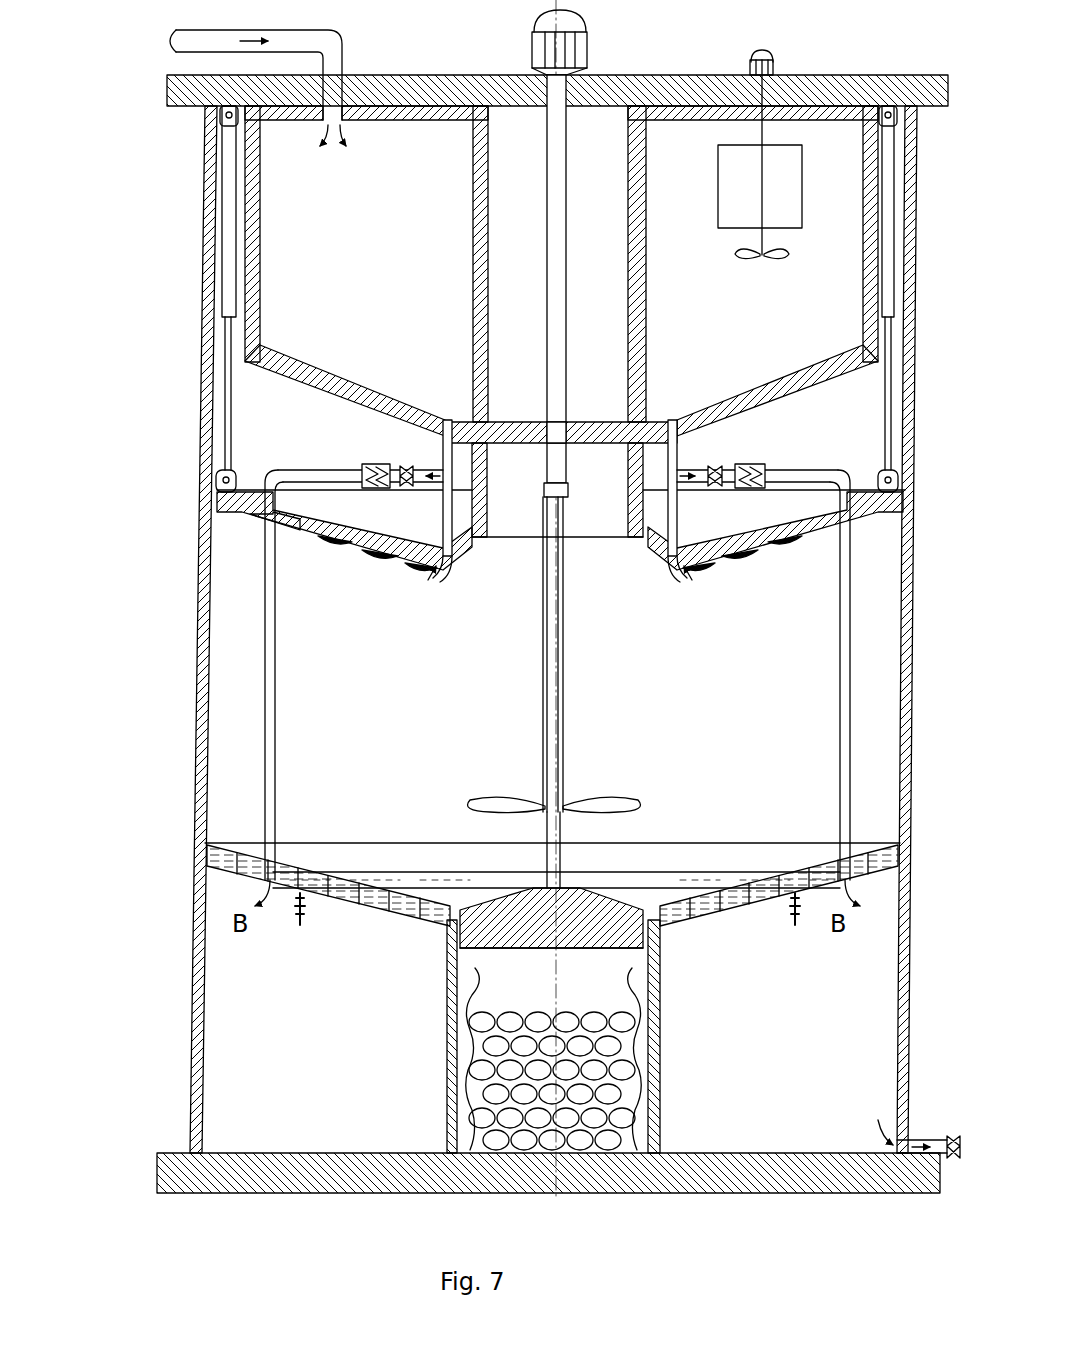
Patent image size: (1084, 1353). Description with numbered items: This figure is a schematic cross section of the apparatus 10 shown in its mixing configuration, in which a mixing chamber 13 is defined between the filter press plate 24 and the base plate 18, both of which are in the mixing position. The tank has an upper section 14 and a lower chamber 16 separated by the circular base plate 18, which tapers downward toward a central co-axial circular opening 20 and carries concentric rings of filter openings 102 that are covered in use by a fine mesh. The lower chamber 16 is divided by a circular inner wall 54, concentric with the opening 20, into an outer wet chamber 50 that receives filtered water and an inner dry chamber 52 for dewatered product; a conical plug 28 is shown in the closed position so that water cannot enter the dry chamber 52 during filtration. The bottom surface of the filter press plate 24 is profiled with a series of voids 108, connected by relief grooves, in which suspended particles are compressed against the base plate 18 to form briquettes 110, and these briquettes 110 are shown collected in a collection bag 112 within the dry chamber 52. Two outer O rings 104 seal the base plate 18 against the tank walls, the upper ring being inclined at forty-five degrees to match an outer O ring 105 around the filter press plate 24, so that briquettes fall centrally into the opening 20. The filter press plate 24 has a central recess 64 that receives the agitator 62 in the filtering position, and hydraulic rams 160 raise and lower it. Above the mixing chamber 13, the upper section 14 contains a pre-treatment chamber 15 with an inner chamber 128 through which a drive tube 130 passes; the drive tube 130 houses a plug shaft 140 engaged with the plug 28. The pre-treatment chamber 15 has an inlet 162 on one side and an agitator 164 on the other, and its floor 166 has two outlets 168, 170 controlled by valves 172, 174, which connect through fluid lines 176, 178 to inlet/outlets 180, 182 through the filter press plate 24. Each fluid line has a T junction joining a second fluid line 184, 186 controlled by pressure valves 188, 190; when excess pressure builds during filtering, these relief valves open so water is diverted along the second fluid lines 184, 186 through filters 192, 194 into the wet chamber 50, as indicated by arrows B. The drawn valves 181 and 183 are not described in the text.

The apparatus 10 is at (148, 462).
The mixing chamber 13 is at (660, 748).
The upper section 14 is at (140, 352).
The pre-treatment chamber 15 is at (440, 240).
The lower chamber 16 is at (865, 1002).
The base plate 18 is at (722, 915).
The central opening 20 is at (655, 956).
The filter press plate 24 is at (735, 565).
The conical plug 28 is at (590, 905).
The wet chamber 50 is at (826, 1044).
The dry chamber 52 is at (540, 994).
The inner wall 54 is at (445, 995).
The agitator 62 is at (482, 797).
The central recess 64 is at (605, 496).
The filter openings 102 is at (392, 898).
The outer O rings 104 is at (207, 846).
The outer O ring 105 is at (212, 498).
The voids 108 is at (352, 560).
The briquettes 110 is at (662, 1022).
The collection bag 112 is at (662, 1078).
The inner chamber 128 is at (620, 255).
The drive tube 130 is at (566, 318).
The plug shaft 140 is at (563, 650).
The hydraulic rams 160 is at (222, 246).
The inlet 162 is at (346, 50).
The agitator 164 is at (760, 188).
The floor 166 is at (435, 385).
The outlet 168 is at (445, 418).
The outlet 170 is at (668, 420).
The valve 172 is at (690, 448).
The valve 174 is at (410, 448).
The fluid line 176 is at (672, 514).
The fluid line 178 is at (432, 514).
The inlet/outlet 180 is at (447, 592).
The first valve 181 is at (355, 460).
The inlet/outlet 182 is at (660, 555).
The second valve 183 is at (724, 462).
The second fluid line 184 is at (277, 648).
The second fluid line 186 is at (838, 665).
The pressure valve 188 is at (767, 470).
The pressure valve 190 is at (362, 476).
The filter 192 is at (345, 540).
The filter 194 is at (808, 535).